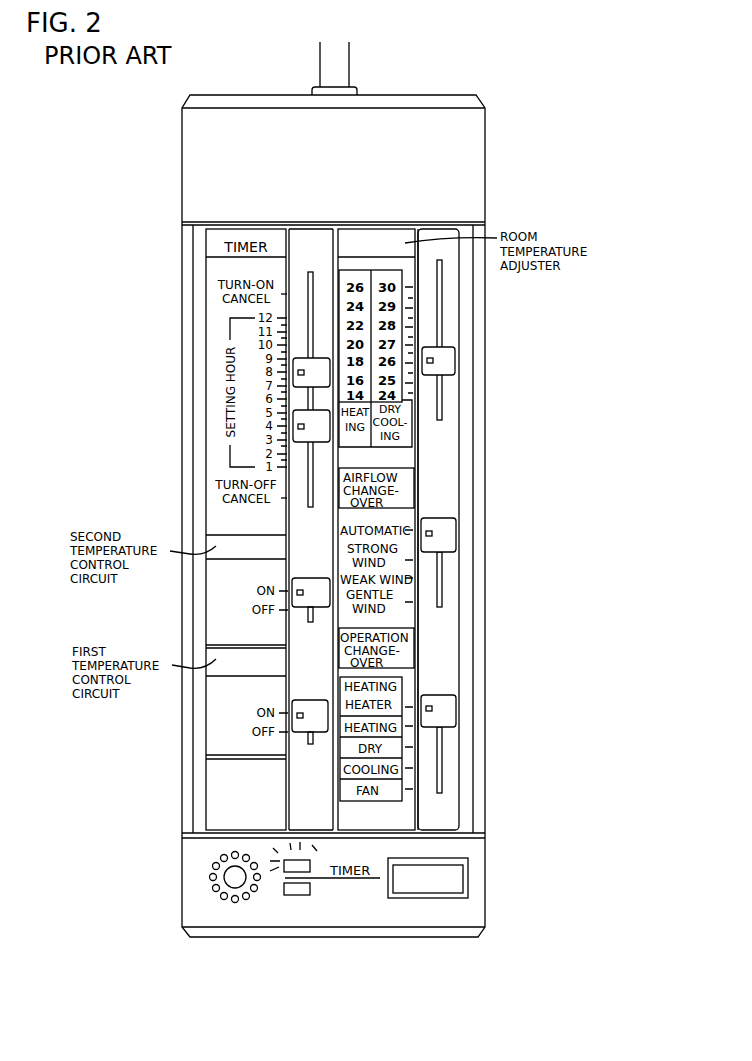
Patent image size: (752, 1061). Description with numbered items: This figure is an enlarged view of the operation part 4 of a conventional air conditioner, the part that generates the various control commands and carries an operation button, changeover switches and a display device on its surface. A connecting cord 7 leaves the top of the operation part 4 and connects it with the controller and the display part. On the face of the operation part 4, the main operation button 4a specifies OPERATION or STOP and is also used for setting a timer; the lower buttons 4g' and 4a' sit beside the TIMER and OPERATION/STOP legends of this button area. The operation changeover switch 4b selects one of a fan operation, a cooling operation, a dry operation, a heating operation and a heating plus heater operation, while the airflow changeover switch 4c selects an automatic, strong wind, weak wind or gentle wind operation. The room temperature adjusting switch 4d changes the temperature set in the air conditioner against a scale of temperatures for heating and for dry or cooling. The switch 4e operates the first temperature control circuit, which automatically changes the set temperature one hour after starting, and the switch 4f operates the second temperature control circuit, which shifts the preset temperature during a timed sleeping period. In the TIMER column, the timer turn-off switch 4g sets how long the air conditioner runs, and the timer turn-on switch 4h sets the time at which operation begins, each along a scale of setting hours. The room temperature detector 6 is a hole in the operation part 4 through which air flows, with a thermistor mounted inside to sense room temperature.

The operation part 4 is at (440, 95).
The connecting cord 7 is at (349, 62).
The timer turn-on switch 4h is at (303, 356).
The timer turn-off switch 4g is at (311, 476).
The second temperature control circuit switch 4f is at (300, 609).
The first temperature control circuit switch 4e is at (310, 700).
The room temperature adjusting switch 4d is at (447, 347).
The airflow changeover switch 4c is at (456, 527).
The operation changeover switch 4b is at (456, 703).
The timer button 4g' is at (301, 834).
The operation/stop button 4a' is at (332, 906).
The main operation button 4a is at (460, 878).
The room temperature detector 6 is at (222, 864).